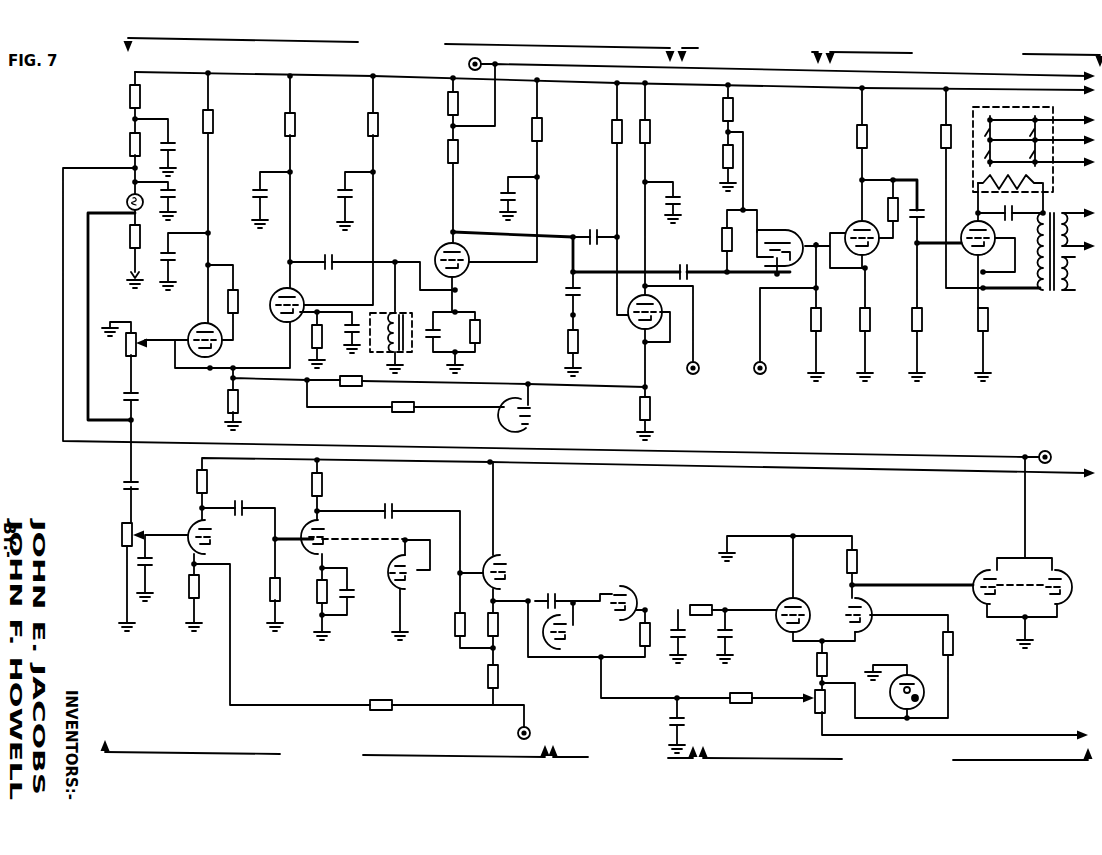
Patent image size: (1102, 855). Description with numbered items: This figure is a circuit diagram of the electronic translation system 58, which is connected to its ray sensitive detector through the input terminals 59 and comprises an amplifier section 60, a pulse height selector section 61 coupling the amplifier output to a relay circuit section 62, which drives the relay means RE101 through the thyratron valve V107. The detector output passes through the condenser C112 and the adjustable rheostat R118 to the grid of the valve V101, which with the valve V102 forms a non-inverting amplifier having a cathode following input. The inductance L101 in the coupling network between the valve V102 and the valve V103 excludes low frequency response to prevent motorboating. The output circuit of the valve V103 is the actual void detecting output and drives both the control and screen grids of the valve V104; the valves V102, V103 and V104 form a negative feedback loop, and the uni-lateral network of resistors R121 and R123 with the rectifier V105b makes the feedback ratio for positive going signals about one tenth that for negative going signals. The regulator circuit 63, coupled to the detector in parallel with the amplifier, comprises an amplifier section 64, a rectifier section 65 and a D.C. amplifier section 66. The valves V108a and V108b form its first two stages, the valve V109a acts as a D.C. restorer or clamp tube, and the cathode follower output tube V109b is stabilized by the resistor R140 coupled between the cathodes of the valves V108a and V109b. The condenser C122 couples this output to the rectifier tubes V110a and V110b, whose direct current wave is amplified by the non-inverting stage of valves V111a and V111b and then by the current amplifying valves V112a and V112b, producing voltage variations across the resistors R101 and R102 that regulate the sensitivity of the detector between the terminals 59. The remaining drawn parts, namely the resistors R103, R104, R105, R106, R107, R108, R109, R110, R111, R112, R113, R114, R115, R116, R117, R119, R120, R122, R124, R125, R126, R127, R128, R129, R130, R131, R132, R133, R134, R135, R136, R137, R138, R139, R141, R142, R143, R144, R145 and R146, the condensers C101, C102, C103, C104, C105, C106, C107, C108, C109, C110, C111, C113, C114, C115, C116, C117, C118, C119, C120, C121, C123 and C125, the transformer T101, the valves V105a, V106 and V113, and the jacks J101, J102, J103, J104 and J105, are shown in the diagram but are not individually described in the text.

The electronic translation system 58 is at (100, 134).
The input terminals 59 is at (127, 201).
The amplifier section 60 is at (399, 53).
The pulse height selector section 61 is at (750, 54).
The relay circuit section 62 is at (964, 61).
The regulator circuit 63 is at (599, 790).
The amplifier section 64 is at (325, 759).
The rectifier section 65 is at (623, 763).
The D.C. amplifier section 66 is at (896, 765).
The resistor R101 is at (117, 96).
The resistor R102 is at (116, 144).
The resistor R103 is at (224, 121).
The resistor R104 is at (306, 124).
The resistor R105 is at (389, 124).
The resistor R106 is at (432, 103).
The resistor R107 is at (434, 151).
The resistor R108 is at (553, 129).
The resistor R109 is at (601, 131).
The resistor R110 is at (662, 131).
The resistor R111 is at (712, 109).
The resistor R112 is at (711, 156).
The resistor R113 is at (844, 136).
The resistor R114 is at (929, 136).
The resistor R115 is at (881, 201).
The resistor R116 is at (710, 239).
The resistor R117 is at (151, 236).
The adjustable rheostat R118 is at (121, 344).
The resistor R119 is at (249, 293).
The resistor R120 is at (333, 337).
The resistor R121 is at (351, 372).
The resistor R122 is at (213, 401).
The resistor R123 is at (403, 416).
The resistor R124 is at (492, 331).
The resistor R125 is at (557, 341).
The resistor R126 is at (627, 408).
The resistor R127 is at (798, 319).
The resistor R128 is at (848, 319).
The resistor R129 is at (898, 319).
The resistor R130 is at (965, 319).
The resistor R131 is at (184, 481).
The resistor R132 is at (299, 484).
The potentiometer R133 is at (113, 534).
The resistor R134 is at (178, 586).
The resistor R135 is at (258, 589).
The resistor R136 is at (306, 591).
The resistor R137 is at (441, 624).
The resistor R138 is at (509, 624).
The resistor R139 is at (474, 676).
The resistor R140 is at (381, 697).
The resistor R141 is at (628, 634).
The resistor R142 is at (703, 602).
The resistor R143 is at (743, 707).
The resistor R144 is at (802, 664).
The potentiometer R145 is at (831, 701).
The resistor R146 is at (869, 561).
The capacitor C101 is at (184, 153).
The capacitor C102 is at (184, 190).
The capacitor C103 is at (243, 200).
The capacitor C104 is at (328, 200).
The capacitor C105 is at (490, 202).
The capacitor C106 is at (572, 228).
The capacitor C107 is at (667, 265).
The capacitor C108 is at (559, 298).
The capacitor C109 is at (931, 220).
The capacitor C110 is at (1025, 207).
The capacitor C111 is at (184, 259).
The condenser C112 is at (116, 403).
The capacitor C113 is at (346, 269).
The capacitor C114 is at (448, 340).
The capacitor C115 is at (114, 491).
The capacitor C116 is at (254, 501).
The capacitor C117 is at (405, 504).
The capacitor C118 is at (361, 601).
The capacitor C119 is at (693, 641).
The capacitor C120 is at (739, 641).
The capacitor C121 is at (692, 728).
The condenser C122 is at (565, 594).
The capacitor C123 is at (160, 550).
The capacitor C125 is at (688, 191).
The inductance L101 is at (391, 332).
The transformer T101 is at (1050, 260).
The relay means RE101 is at (1013, 139).
The electron flow valve V101 is at (191, 335).
The electron flow valve V102 is at (302, 303).
The electron flow valve V103 is at (466, 258).
The electron flow valve V104 is at (657, 307).
The vacuum tube section V105a is at (780, 240).
The rectifier V105b is at (540, 408).
The vacuum tube V106 is at (850, 229).
The thyratron valve V107 is at (993, 238).
The electron flow valve V108a is at (220, 534).
The electron flow valve V108b is at (337, 534).
The electron flow valve V109a is at (381, 565).
The cathode follower output tube V109b is at (513, 567).
The rectifier tube V110a is at (572, 637).
The rectifier tube V110b is at (639, 599).
The electron flow valve V111a is at (782, 608).
The electron flow valve V111b is at (842, 611).
The current amplifying valve V112a is at (974, 585).
The current amplifying valve V112b is at (1040, 586).
The voltage regulator tube V113 is at (901, 696).
The jack J101 is at (458, 66).
The jack J102 is at (693, 380).
The jack J103 is at (760, 380).
The jack J104 is at (504, 736).
The jack J105 is at (1040, 448).